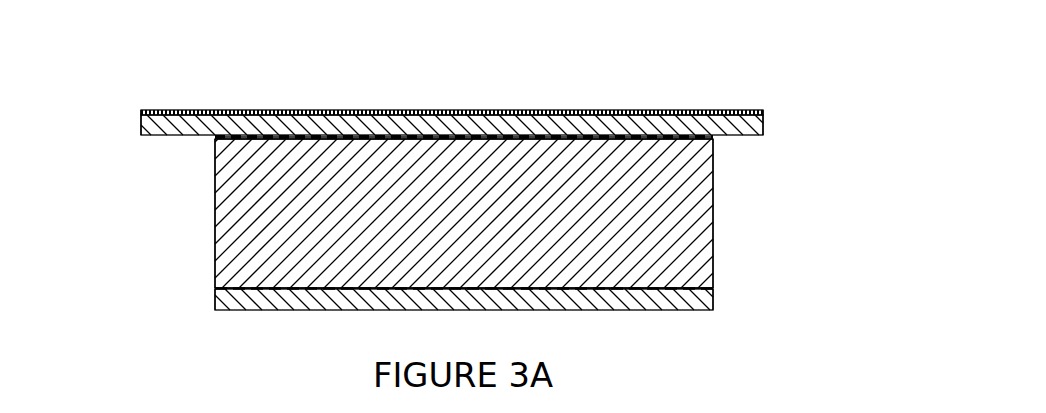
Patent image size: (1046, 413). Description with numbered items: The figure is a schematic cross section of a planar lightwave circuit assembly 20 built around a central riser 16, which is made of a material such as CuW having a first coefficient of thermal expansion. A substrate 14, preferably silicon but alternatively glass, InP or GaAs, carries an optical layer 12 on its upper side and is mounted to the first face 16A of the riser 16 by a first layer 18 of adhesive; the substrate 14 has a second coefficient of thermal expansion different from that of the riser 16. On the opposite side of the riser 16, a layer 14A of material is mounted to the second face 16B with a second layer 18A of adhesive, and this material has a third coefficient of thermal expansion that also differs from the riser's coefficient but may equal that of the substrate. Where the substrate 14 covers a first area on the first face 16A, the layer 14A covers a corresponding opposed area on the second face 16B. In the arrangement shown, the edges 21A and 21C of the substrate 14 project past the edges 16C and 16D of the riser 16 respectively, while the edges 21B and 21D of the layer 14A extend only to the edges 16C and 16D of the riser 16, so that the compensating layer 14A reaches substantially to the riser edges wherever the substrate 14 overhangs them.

The PLC assembly 20 is at (231, 55).
The optical layer 12 is at (200, 110).
The substrate 14 is at (205, 126).
The layer of material 14A is at (572, 292).
The riser 16 is at (317, 250).
The first face of riser 16A is at (663, 112).
The second face of riser 16B is at (643, 290).
The edge of riser 16C is at (214, 212).
The edge of riser 16D is at (713, 178).
The first layer of adhesive 18 is at (710, 137).
The second layer of adhesive 18A is at (715, 288).
The edge of substrate 21A is at (141, 125).
The edge of layer 21B is at (214, 300).
The edge of substrate 21C is at (763, 125).
The edge of layer 21D is at (715, 302).